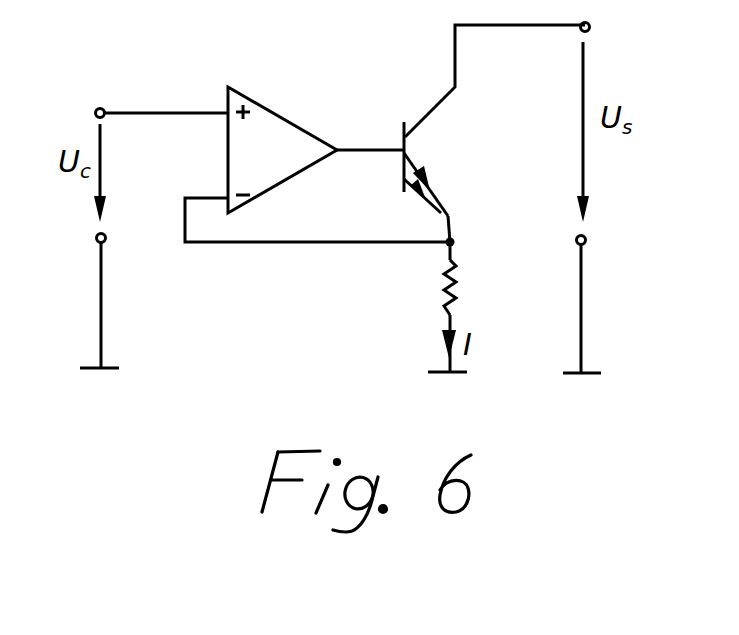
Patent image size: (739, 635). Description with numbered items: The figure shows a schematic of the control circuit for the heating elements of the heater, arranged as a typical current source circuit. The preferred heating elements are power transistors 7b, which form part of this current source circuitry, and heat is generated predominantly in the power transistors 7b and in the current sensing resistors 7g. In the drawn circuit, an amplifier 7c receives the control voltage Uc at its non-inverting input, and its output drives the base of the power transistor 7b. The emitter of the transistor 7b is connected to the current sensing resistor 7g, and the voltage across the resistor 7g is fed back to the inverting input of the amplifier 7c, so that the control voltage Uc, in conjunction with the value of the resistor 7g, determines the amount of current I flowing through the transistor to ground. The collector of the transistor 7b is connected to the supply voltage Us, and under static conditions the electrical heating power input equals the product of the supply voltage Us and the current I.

The operational amplifier 7c is at (259, 147).
The power transistor 7b is at (408, 145).
The current sensing resistor 7g is at (455, 280).